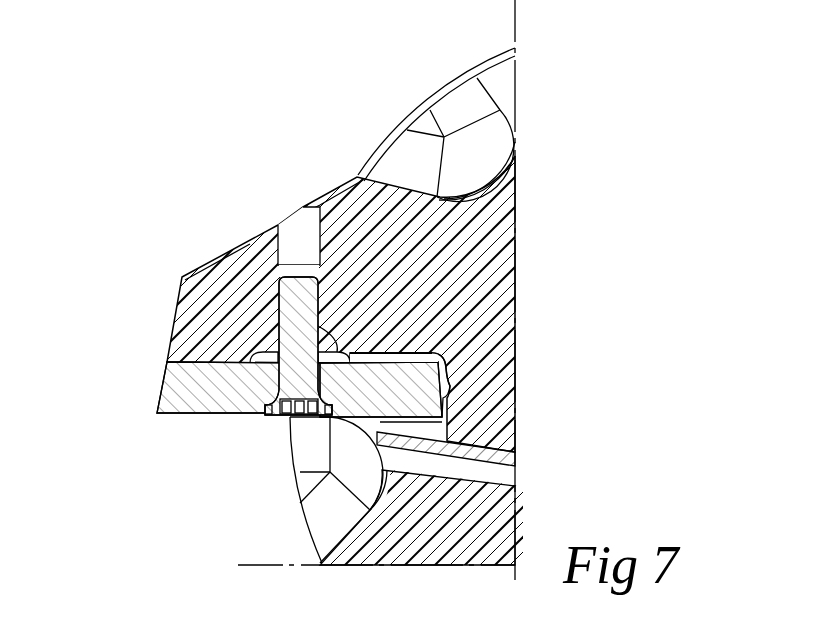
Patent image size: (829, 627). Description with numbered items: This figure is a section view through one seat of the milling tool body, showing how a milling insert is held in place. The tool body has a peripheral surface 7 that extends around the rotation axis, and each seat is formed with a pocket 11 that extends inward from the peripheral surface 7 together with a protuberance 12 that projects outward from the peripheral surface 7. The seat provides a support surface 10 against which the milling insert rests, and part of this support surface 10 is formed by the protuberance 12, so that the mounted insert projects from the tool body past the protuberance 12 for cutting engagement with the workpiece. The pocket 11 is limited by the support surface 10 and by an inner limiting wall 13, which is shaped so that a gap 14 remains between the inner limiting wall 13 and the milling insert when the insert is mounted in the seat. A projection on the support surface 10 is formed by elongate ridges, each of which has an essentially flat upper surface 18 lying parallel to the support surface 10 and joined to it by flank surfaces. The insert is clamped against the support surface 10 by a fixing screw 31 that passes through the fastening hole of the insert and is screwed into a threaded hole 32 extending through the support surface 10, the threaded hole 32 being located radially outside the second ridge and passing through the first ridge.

The peripheral surface 7 is at (392, 143).
The support surface 10 is at (188, 364).
The pocket 11 is at (368, 425).
The protuberance 12 is at (203, 304).
The inner limiting wall 13 is at (440, 392).
The gap 14 is at (446, 432).
The upper surface 18 is at (382, 492).
The fixing screw 31 is at (294, 387).
The threaded hole 32 is at (297, 270).